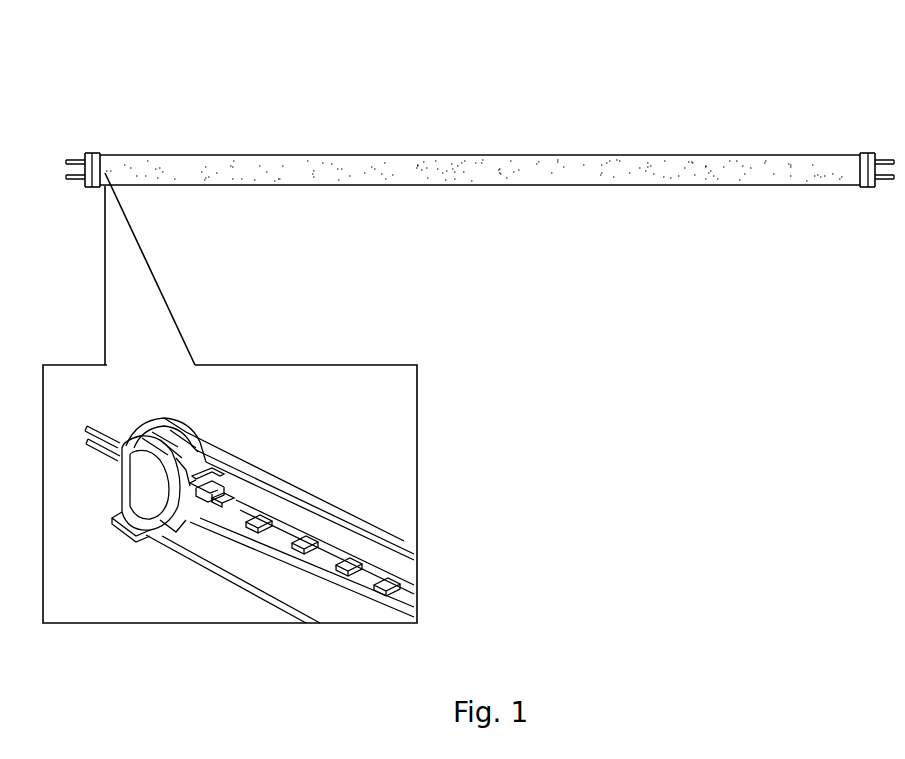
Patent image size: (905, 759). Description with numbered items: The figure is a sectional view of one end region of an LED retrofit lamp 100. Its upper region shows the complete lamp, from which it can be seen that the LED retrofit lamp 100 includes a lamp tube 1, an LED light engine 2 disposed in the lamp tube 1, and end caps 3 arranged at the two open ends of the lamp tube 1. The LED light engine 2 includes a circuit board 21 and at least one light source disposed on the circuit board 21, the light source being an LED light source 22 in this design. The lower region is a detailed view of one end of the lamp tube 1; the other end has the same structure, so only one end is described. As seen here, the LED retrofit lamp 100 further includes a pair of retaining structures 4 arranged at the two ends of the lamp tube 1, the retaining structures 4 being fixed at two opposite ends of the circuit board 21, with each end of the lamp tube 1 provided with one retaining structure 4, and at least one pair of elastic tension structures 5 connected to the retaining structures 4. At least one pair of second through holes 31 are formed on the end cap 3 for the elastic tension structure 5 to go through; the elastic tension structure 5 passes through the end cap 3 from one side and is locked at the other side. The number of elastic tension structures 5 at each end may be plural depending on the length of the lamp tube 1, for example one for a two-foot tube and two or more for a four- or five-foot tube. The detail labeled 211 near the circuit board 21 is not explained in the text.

The LED retrofit lamp 100 is at (792, 45).
The lamp tube 1 is at (480, 155).
The LED light engine 2 is at (585, 163).
The circuit board 21 is at (235, 513).
The LED light source 22 is at (263, 522).
The positioning hole 211 is at (220, 503).
The end cap 3 is at (85, 188).
The second through holes 31 is at (130, 440).
The retaining structure 4 is at (195, 478).
The elastic tension structure 5 is at (127, 455).